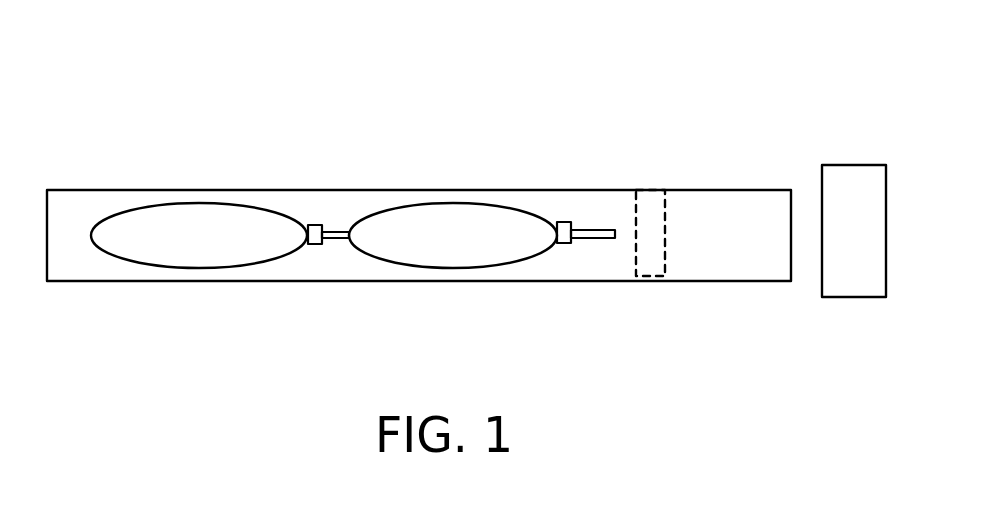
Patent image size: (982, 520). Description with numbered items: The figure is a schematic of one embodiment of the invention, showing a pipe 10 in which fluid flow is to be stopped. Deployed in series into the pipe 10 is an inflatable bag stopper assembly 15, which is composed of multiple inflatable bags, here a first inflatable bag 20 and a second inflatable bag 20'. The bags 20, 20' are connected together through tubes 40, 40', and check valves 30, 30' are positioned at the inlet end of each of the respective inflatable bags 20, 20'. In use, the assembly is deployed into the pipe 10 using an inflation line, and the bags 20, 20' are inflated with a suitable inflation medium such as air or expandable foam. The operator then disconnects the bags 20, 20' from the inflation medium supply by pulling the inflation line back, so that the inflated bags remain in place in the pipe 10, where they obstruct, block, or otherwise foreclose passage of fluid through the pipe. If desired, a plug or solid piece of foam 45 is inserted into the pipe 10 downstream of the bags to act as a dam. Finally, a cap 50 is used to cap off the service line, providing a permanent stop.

The pipe 10 is at (720, 189).
The inflatable bag stopper assembly 15 is at (118, 213).
The first inflatable bag 20 is at (199, 185).
The second inflatable bag 20' is at (453, 182).
The check valve 30 is at (322, 128).
The check valve 30' is at (579, 131).
The tube 40 is at (371, 161).
The tube 40' is at (611, 159).
The plug or solid piece of foam 45 is at (654, 210).
The cap 50 is at (858, 187).